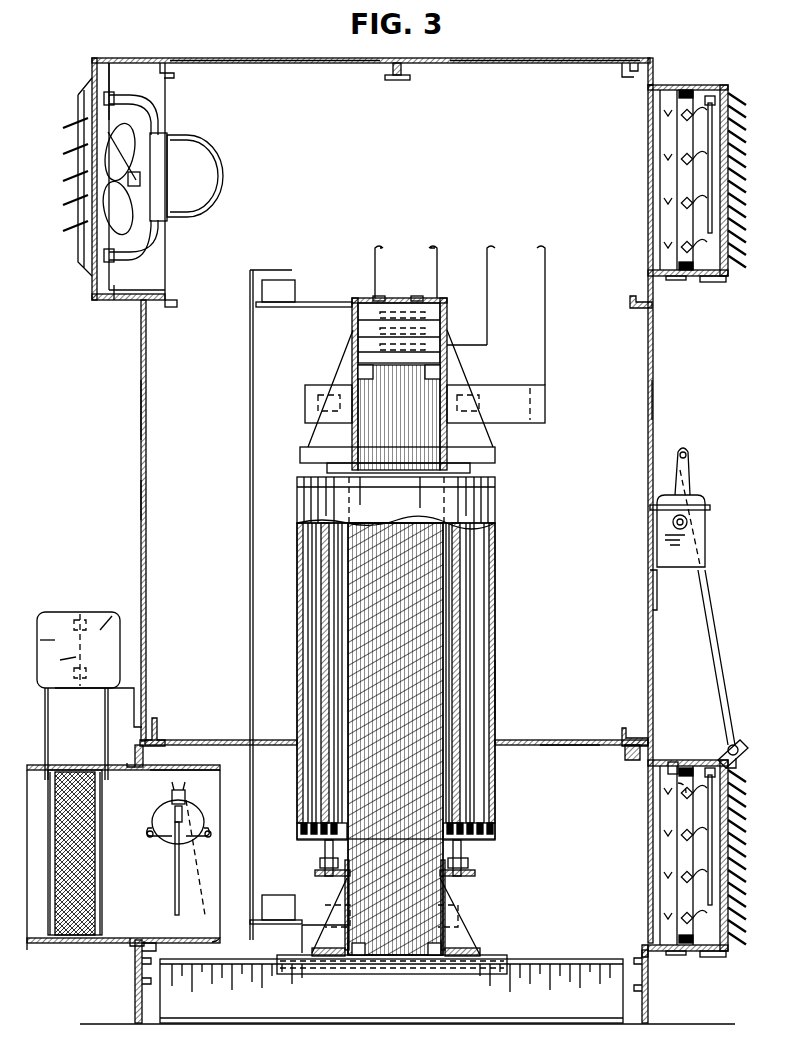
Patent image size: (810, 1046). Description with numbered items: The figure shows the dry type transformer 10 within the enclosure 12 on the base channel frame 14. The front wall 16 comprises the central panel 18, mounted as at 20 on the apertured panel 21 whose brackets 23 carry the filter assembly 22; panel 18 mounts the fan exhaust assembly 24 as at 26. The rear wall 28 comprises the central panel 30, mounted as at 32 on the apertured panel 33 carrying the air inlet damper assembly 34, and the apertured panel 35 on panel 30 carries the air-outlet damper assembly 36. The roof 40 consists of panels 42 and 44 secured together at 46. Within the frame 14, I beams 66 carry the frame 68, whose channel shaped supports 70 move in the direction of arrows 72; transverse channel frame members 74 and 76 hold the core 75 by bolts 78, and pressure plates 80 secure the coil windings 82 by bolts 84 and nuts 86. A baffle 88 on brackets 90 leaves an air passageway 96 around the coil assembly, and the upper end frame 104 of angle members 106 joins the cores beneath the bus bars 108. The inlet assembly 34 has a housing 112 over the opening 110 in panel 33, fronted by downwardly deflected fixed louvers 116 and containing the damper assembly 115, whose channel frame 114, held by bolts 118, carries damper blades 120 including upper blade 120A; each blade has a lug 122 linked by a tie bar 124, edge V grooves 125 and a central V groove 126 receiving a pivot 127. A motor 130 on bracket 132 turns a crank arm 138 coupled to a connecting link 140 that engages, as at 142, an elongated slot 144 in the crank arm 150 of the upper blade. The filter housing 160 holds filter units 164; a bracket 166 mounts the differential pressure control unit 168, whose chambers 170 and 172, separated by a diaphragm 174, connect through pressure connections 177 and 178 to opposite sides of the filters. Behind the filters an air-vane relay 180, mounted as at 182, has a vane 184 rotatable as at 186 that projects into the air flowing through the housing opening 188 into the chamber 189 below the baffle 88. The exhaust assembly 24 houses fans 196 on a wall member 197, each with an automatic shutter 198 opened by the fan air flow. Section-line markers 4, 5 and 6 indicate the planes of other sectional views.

The dry type transformer 10 is at (498, 566).
The enclosure 12 is at (140, 424).
The base channel frame 14 is at (135, 998).
The front wall 16 is at (140, 500).
The central panel 18 is at (146, 470).
The removable mounting 20 is at (152, 722).
The apertured panel 21 is at (144, 956).
The filter assembly 22 is at (82, 945).
The brackets 23 is at (134, 950).
The fan exhaust assembly 24 is at (112, 302).
The fan assembly mounting 26 is at (173, 307).
The rear wall 28 is at (654, 405).
The central panel 30 is at (648, 437).
The removable mounting 32 is at (638, 732).
The apertured panel 33 is at (642, 956).
The air inlet damper assembly 34 is at (706, 958).
The apertured panel 35 is at (642, 282).
The second damper assembly 36 is at (716, 282).
The top wall or roof 40 is at (479, 58).
The removable roof panel 42 is at (295, 62).
The removable roof panel 44 is at (528, 62).
The roof panel joint 46 is at (404, 72).
The I beams 66 is at (440, 1018).
The frame 68 is at (490, 944).
The channel shaped support 70 is at (452, 974).
The arrows 72 is at (412, 984).
The channel frame member 74 is at (440, 936).
The core 75 is at (420, 636).
The channel frame member 76 is at (318, 942).
The bolts 78 is at (455, 910).
The pressure plates 80 is at (298, 836).
The coil windings 82 is at (497, 702).
The bolts 84 is at (328, 876).
The nuts 86 is at (320, 858).
The baffle 88 is at (210, 740).
The brackets 90 is at (150, 748).
The air passageway 96 is at (510, 740).
The upper end frame 104 is at (352, 297).
The angle members 106 is at (416, 298).
The bus bars 108 is at (420, 250).
The opening 110 is at (648, 190).
The housing or duct 112 is at (674, 280).
The channel frame 114 is at (676, 814).
The damper assembly 115 is at (668, 864).
The fixed louvers 116 is at (740, 164).
The bolts 118 is at (674, 762).
The damper blades 120 is at (672, 182).
The upper damper blade 120A is at (670, 796).
The lug 122 is at (712, 96).
The tie bar 124 is at (712, 129).
The V groove 125 is at (664, 840).
The V groove 126 is at (676, 832).
The pivot 127 is at (668, 922).
The motor 130 is at (707, 525).
The bracket 132 is at (658, 602).
The crank arm 138 is at (678, 482).
The connecting link 140 is at (717, 632).
The link engagement 142 is at (738, 746).
The elongated slot 144 is at (722, 760).
The crank arm 150 is at (737, 764).
The housing or duct 160 is at (126, 918).
The filter units 164 is at (58, 840).
The bracket 166 is at (88, 690).
The diaphragm differential pressure control unit 168 is at (66, 611).
The pressure chamber 170 is at (56, 641).
The pressure chamber 172 is at (100, 630).
The diaphragm 174 is at (76, 657).
The pressure connection 177 is at (48, 726).
The pressure connection 178 is at (105, 742).
The air flow responsive control means 180 is at (170, 842).
The control mounting 182 is at (150, 830).
The vane 184 is at (175, 890).
The vane pivot 186 is at (184, 818).
The housing opening 188 is at (222, 790).
The chamber 189 is at (547, 775).
The exhaust fans 196 is at (213, 142).
The wall member 197 is at (109, 76).
The automatic shutter 198 is at (75, 188).
The section line 4 is at (657, 768).
The section line 5 is at (290, 477).
The section line 6 is at (135, 745).